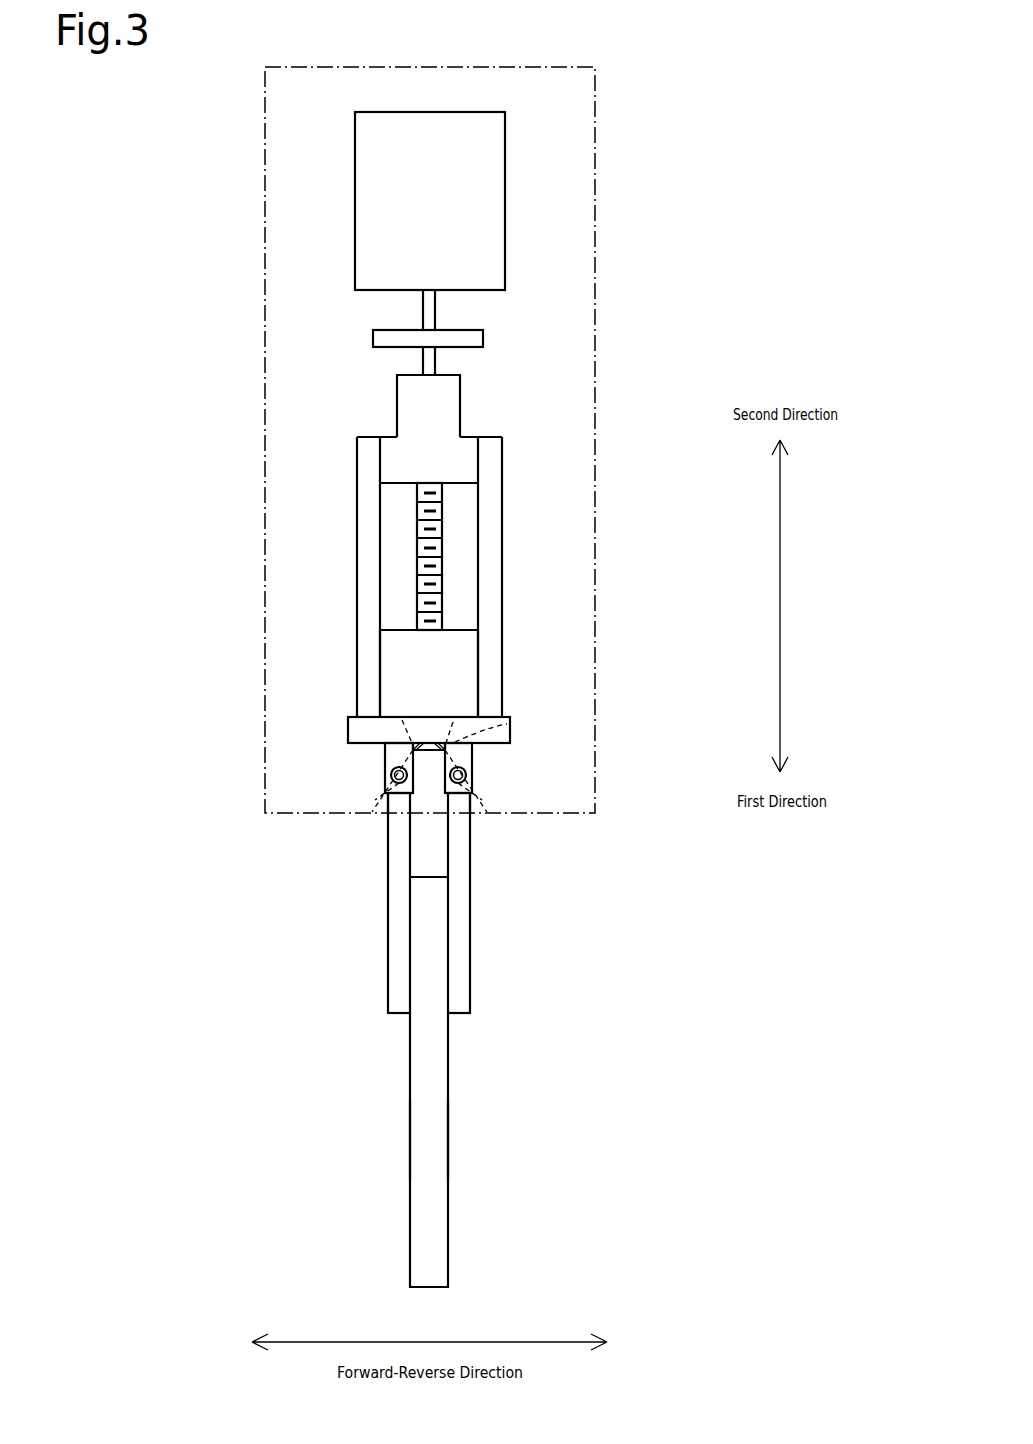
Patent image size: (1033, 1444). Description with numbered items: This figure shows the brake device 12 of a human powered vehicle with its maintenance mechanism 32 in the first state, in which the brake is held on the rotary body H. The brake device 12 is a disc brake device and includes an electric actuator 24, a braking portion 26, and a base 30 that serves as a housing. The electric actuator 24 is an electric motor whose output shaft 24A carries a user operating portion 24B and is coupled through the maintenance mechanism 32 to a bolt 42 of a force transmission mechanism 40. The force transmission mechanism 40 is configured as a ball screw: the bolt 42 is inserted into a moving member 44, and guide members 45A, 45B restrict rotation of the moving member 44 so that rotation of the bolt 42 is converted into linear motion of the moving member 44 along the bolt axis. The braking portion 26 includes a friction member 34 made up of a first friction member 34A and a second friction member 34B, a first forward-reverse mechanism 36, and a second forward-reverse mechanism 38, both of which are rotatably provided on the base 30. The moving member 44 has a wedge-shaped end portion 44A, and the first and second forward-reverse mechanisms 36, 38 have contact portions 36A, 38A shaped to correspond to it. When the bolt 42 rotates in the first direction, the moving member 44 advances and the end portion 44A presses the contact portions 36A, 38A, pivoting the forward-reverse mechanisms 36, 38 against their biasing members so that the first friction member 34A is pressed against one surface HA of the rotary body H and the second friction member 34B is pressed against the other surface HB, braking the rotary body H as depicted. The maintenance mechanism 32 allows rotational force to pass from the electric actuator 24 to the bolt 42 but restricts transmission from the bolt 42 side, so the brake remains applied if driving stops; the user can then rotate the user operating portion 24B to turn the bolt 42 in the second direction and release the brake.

The brake device 12 is at (710, 57).
The base 30 is at (595, 97).
The electric actuator 24 is at (505, 197).
The output shaft 24A is at (435, 303).
The user operating portion 24B is at (483, 338).
The maintenance mechanism 32 is at (460, 403).
The force transmission mechanism 40 is at (552, 487).
The guide member 45A is at (357, 535).
The guide member 45B is at (502, 534).
The bolt 42 is at (440, 570).
The moving member 44 is at (467, 650).
The end portion 44A is at (507, 724).
The braking portion 26 is at (632, 807).
The first forward-reverse mechanism 36 is at (385, 765).
The contact portion 36A is at (388, 800).
The second forward-reverse mechanism 38 is at (475, 768).
The contact portion 38A is at (470, 800).
The friction member 34 is at (563, 900).
The first friction member 34A is at (388, 938).
The second friction member 34B is at (470, 938).
The rotary body H is at (448, 1060).
The one surface HA is at (410, 1140).
The other surface HB is at (448, 1140).